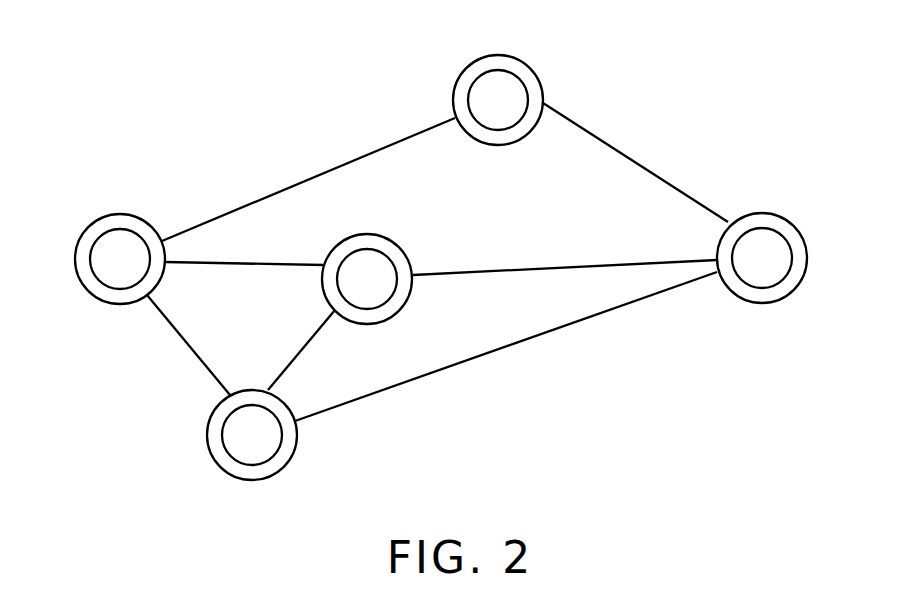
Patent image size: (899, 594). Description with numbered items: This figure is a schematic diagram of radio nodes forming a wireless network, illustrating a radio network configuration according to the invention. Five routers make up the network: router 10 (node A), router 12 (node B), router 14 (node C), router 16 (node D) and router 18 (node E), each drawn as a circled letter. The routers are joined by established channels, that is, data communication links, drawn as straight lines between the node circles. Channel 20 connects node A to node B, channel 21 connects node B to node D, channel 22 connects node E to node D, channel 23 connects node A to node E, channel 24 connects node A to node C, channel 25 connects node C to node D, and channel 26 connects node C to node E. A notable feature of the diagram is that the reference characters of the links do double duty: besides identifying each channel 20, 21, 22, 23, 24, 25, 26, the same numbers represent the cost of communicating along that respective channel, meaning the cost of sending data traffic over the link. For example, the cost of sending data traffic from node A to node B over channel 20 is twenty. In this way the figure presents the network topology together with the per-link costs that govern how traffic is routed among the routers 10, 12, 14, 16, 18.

The router 10 is at (75, 260).
The router 12 is at (520, 62).
The router 14 is at (372, 234).
The router 16 is at (808, 251).
The router 18 is at (252, 481).
The channel 20 is at (308, 179).
The channel 21 is at (635, 162).
The channel 22 is at (506, 346).
The channel 23 is at (188, 345).
The channel 24 is at (244, 251).
The channel 25 is at (565, 258).
The channel 26 is at (301, 350).